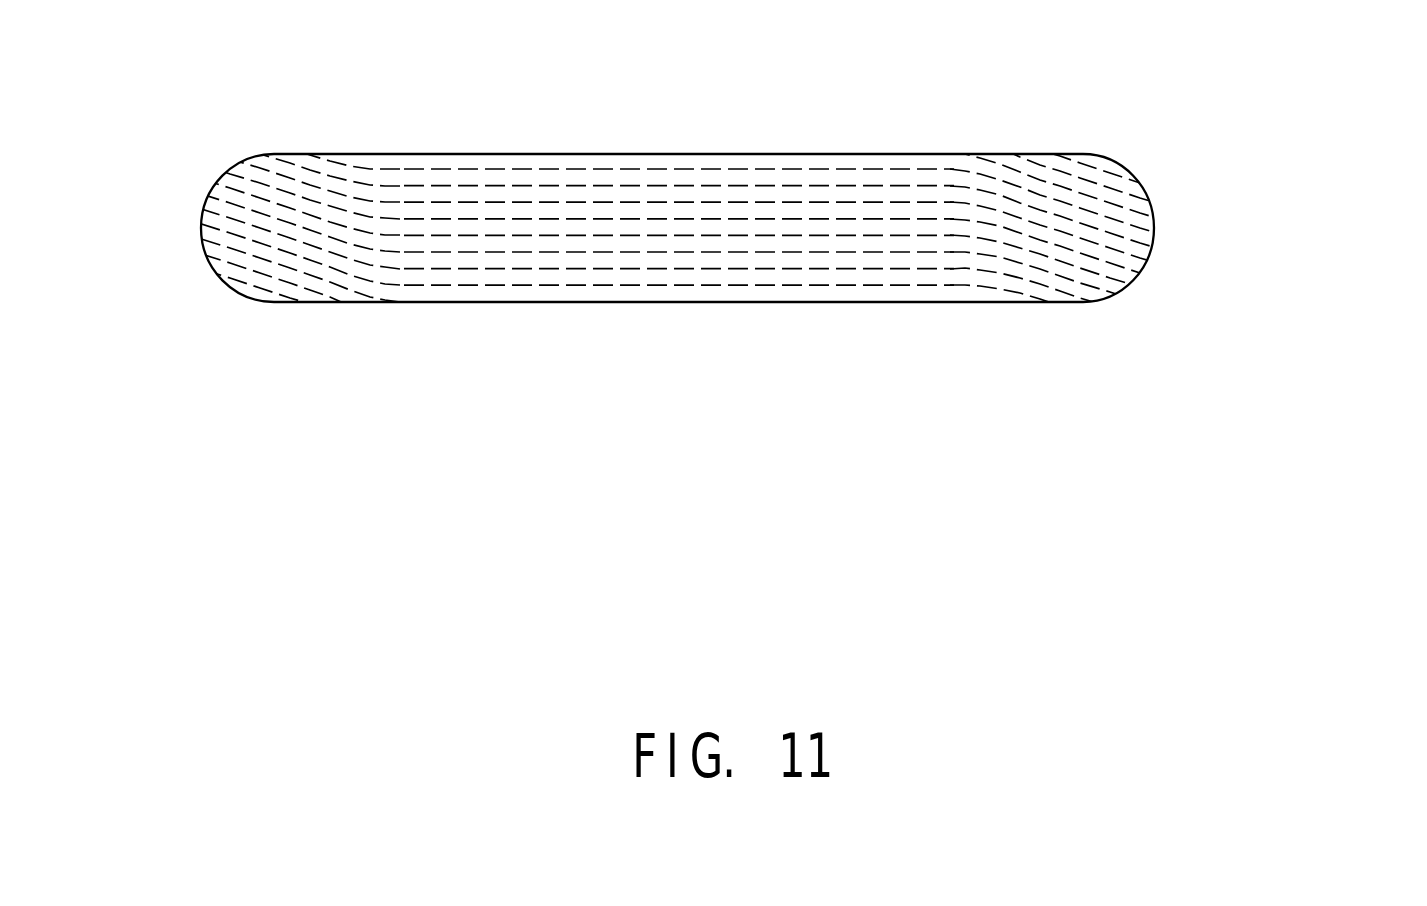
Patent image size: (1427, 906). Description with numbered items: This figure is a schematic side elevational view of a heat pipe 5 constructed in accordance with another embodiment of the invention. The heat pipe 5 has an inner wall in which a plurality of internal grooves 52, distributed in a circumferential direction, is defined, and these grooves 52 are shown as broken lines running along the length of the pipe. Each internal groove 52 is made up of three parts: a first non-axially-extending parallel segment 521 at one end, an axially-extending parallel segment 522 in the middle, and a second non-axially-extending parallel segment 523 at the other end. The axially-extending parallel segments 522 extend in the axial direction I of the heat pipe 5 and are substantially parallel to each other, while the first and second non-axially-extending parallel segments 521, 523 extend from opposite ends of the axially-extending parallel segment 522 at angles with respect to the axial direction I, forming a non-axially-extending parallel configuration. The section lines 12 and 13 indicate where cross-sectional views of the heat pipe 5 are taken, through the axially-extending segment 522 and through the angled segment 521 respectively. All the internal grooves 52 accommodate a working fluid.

The heat pipe 5 is at (1330, 268).
The section line 12- 12 is at (180, 233).
The section line 13- 13 is at (1088, 93).
The axial direction I is at (690, 168).
The internal groove 52 is at (1010, 432).
The first non-axially-extending parallel segment 521 is at (1018, 272).
The axially-extending parallel segment 522 is at (588, 286).
The second non-axially-extending parallel segment 523 is at (333, 270).